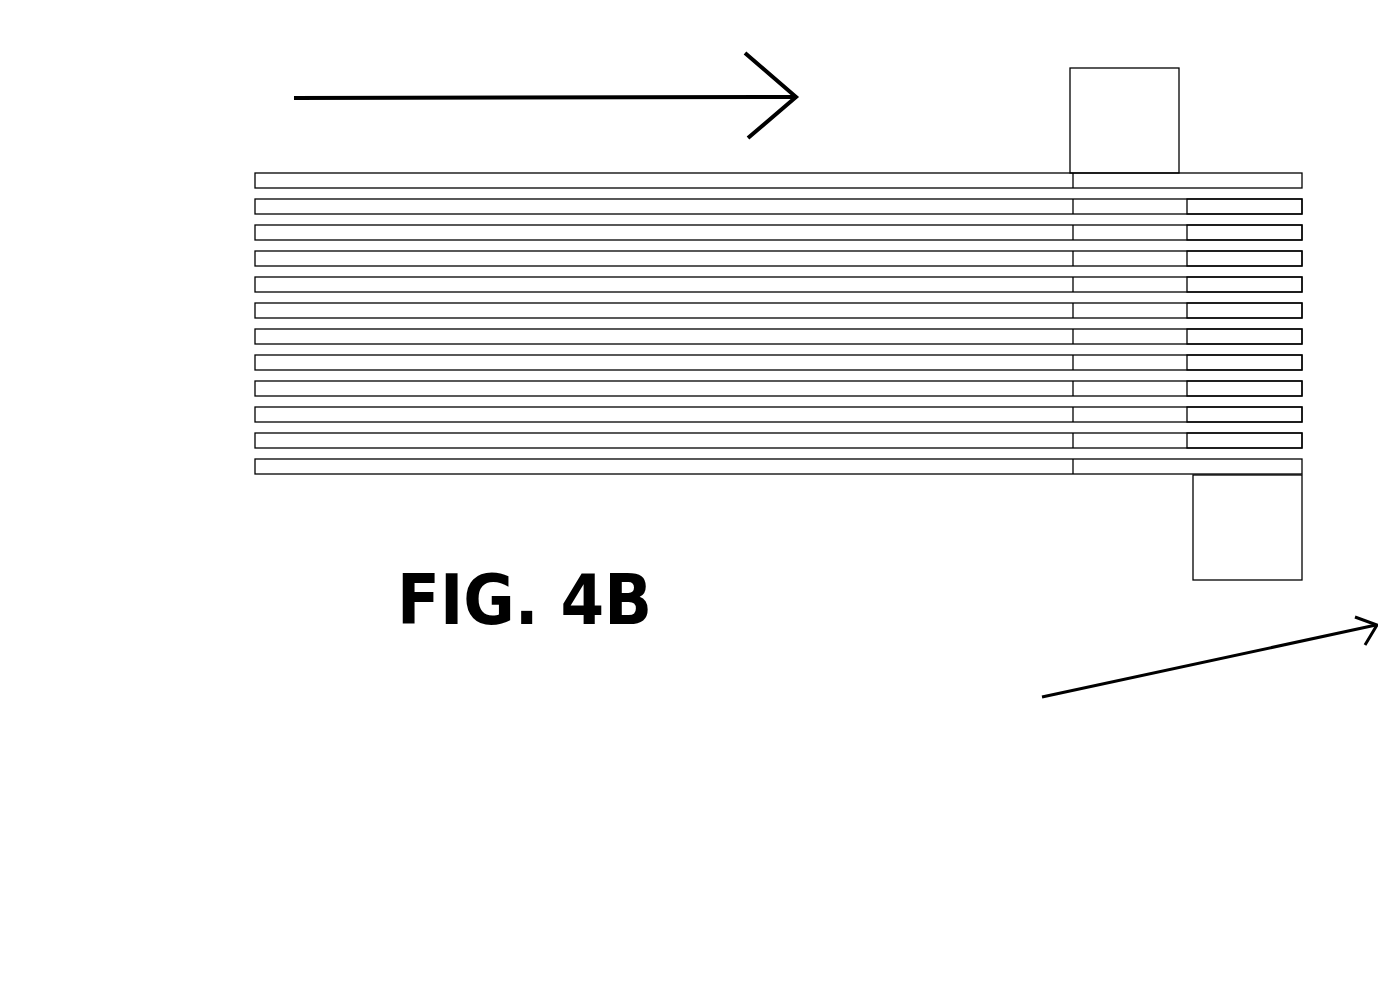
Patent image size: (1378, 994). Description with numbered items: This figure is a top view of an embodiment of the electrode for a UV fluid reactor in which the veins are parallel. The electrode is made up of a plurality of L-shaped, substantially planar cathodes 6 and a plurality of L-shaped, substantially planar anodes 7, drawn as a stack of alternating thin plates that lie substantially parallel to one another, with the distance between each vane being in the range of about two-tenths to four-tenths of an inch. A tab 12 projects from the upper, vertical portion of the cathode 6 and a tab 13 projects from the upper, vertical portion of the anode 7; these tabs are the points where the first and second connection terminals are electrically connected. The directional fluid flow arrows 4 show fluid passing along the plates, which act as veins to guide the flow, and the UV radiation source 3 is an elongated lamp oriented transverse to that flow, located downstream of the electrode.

The UV radiation source 3 is at (1189, 672).
The directional fluid flow arrows 4 is at (545, 106).
The cathode 6 is at (1302, 178).
The anode 7 is at (255, 258).
The tab of upper vertical portion of cathode 12 is at (1102, 132).
The tab of upper vertical portion of anode 13 is at (1222, 540).